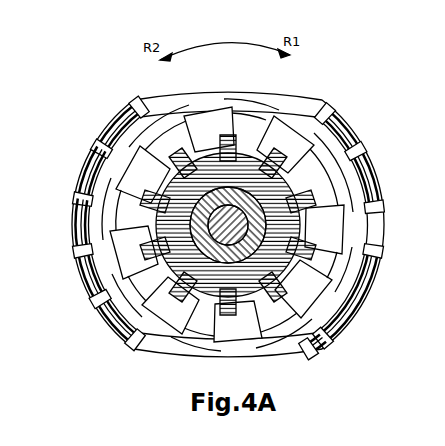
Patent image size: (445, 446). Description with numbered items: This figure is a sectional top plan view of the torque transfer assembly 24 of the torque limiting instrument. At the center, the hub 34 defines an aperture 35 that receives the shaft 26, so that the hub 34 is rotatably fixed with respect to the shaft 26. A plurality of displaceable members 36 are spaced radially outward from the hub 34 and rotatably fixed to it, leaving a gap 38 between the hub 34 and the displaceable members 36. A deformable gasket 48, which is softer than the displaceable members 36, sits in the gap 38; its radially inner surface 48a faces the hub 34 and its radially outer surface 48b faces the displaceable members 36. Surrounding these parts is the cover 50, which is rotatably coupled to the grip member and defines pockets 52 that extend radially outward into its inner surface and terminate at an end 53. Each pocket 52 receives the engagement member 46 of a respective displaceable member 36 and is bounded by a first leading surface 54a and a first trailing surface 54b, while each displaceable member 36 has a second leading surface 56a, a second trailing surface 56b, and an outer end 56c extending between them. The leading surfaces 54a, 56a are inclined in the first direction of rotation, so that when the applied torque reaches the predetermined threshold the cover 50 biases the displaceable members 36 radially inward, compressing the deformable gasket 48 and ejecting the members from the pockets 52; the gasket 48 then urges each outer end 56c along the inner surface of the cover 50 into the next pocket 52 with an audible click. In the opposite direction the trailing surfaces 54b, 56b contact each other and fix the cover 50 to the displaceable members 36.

The torque transfer assembly 24 is at (74, 173).
The shaft 26 is at (275, 282).
The hub 34 is at (180, 300).
The aperture 35 is at (125, 186).
The displaceable member 36 is at (125, 163).
The gap 38 is at (300, 250).
The engagement member 46 is at (340, 325).
The deformable gasket 48 is at (257, 295).
The radially inner surface 48a is at (203, 292).
The radially outer surface 48b is at (220, 300).
The cover 50 is at (355, 120).
The pocket 52 is at (311, 150).
The end 53 is at (140, 150).
The first leading surface 54a is at (110, 324).
The first trailing surface 54b is at (78, 243).
The second leading surface 56a is at (133, 295).
The second trailing surface 56b is at (115, 222).
The outer end 56c is at (110, 280).